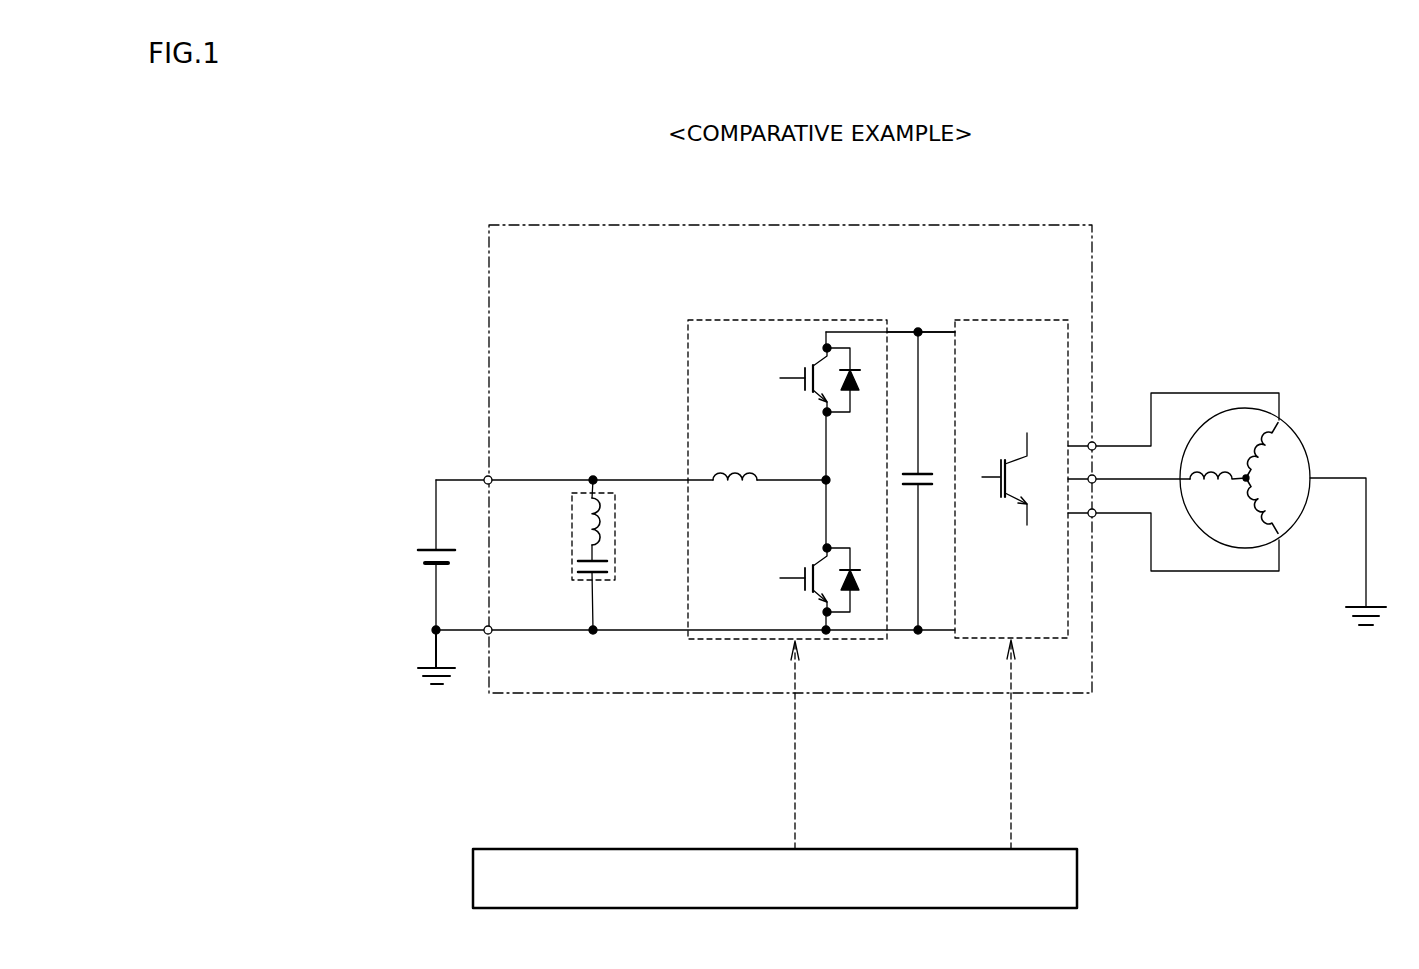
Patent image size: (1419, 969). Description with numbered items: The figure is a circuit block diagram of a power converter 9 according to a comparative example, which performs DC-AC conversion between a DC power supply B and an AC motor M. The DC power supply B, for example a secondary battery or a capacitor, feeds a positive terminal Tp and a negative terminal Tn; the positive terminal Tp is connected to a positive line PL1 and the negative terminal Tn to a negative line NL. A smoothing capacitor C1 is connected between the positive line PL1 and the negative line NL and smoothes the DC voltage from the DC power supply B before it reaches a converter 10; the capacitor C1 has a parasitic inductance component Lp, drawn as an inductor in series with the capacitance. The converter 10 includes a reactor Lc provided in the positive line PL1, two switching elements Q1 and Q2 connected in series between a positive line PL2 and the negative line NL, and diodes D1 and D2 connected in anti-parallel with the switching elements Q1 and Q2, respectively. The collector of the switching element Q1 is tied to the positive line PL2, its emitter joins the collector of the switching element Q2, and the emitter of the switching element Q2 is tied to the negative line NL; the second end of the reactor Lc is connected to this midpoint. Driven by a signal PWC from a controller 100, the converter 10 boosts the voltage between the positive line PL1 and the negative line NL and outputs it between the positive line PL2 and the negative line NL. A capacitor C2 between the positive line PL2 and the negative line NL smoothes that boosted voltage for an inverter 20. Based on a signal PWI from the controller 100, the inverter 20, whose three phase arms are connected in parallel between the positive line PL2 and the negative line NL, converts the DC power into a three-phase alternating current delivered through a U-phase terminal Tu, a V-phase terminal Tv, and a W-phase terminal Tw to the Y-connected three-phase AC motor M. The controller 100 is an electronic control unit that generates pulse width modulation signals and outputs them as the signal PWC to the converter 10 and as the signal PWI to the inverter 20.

The power converter 9 is at (1053, 225).
The converter 10 is at (818, 318).
The inverter 20 is at (1035, 318).
The controller 100 is at (913, 848).
The DC power supply B is at (425, 548).
The positive terminal Tp is at (487, 477).
The negative terminal Tn is at (487, 628).
The positive line PL1 is at (538, 475).
The negative line NL is at (537, 627).
The parasitic inductance component Lp is at (600, 520).
The capacitor C1 is at (600, 577).
The reactor Lc is at (735, 463).
The switching element Q1 is at (803, 380).
The diode D1 is at (852, 384).
The switching element Q2 is at (803, 580).
The diode D2 is at (852, 585).
The capacitor C2 is at (928, 472).
The positive line PL2 is at (903, 330).
The U-phase terminal Tu is at (1094, 443).
The V-phase terminal Tv is at (1094, 476).
The W-phase terminal Tw is at (1094, 510).
The AC motor M is at (1292, 425).
The signal PWC is at (771, 745).
The signal PWI is at (1032, 744).